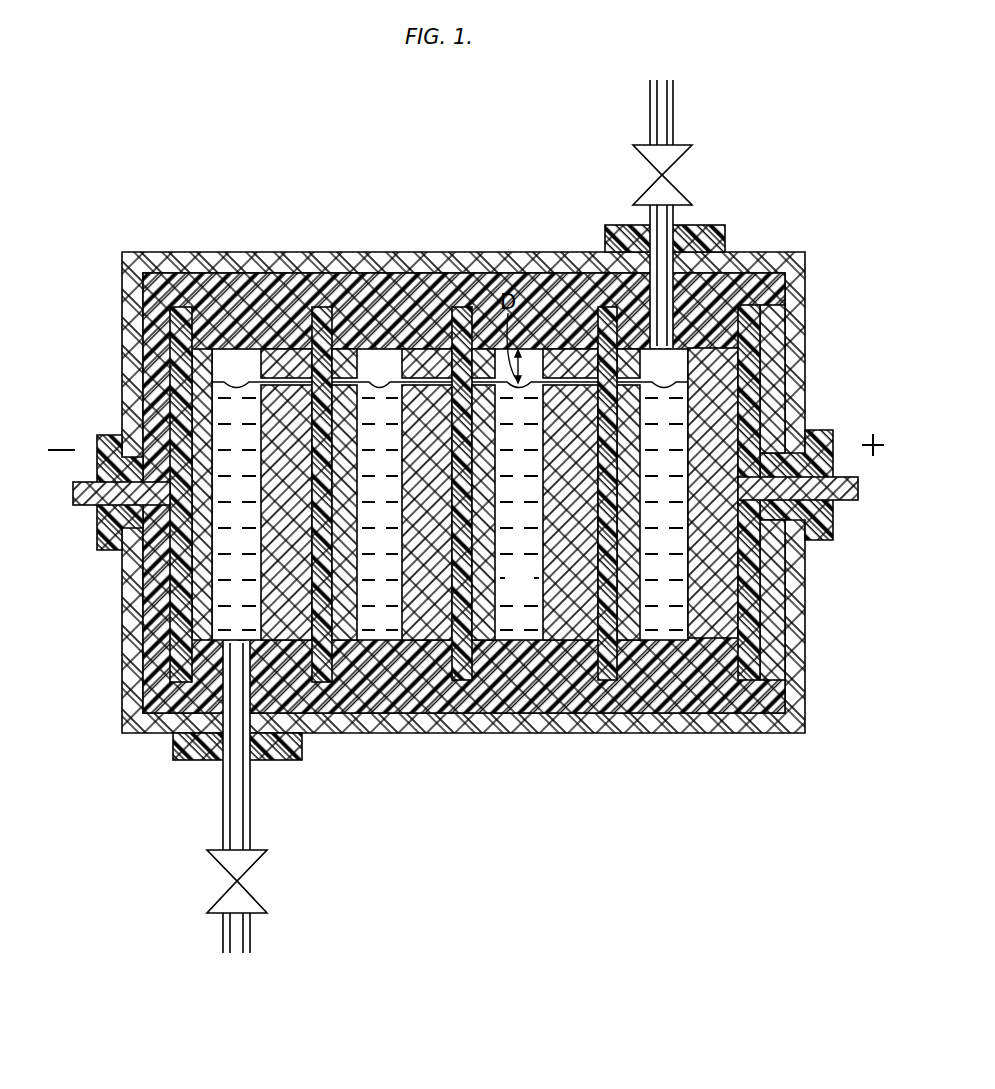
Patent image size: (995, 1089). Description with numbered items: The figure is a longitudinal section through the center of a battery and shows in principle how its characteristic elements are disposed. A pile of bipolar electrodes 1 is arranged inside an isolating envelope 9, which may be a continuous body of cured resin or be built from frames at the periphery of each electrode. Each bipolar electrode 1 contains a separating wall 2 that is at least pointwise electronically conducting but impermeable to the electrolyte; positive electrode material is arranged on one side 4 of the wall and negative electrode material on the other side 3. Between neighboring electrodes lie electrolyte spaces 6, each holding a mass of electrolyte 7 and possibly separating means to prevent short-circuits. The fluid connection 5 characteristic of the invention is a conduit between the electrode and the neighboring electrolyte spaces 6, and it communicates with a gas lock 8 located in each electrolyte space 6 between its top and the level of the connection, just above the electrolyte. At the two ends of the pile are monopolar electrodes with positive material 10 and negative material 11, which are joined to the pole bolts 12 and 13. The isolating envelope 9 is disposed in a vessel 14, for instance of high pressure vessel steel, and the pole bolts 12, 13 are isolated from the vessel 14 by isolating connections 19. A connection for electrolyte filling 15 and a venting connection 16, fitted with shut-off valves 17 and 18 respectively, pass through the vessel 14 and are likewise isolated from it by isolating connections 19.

The bipolar electrode 1 is at (337, 348).
The separating wall 2 is at (463, 308).
The negative electrode material side 3 is at (485, 632).
The positive electrode material side 4 is at (412, 632).
The fluid connection 5 is at (285, 380).
The electrolyte space 6 is at (367, 623).
The electrolyte 7 is at (508, 586).
The gas lock 8 is at (532, 358).
The isolating envelope 9 is at (770, 293).
The positive material 10 is at (707, 628).
The negative material 11 is at (203, 362).
The pole bolt 12 is at (858, 483).
The pole bolt 13 is at (73, 497).
The vessel 14 is at (805, 602).
The electrolyte filling connection 15 is at (222, 812).
The venting connection 16 is at (673, 215).
The shut-off valve 17 is at (220, 897).
The shut-off valve 18 is at (680, 142).
The isolating connection 19 is at (713, 238).